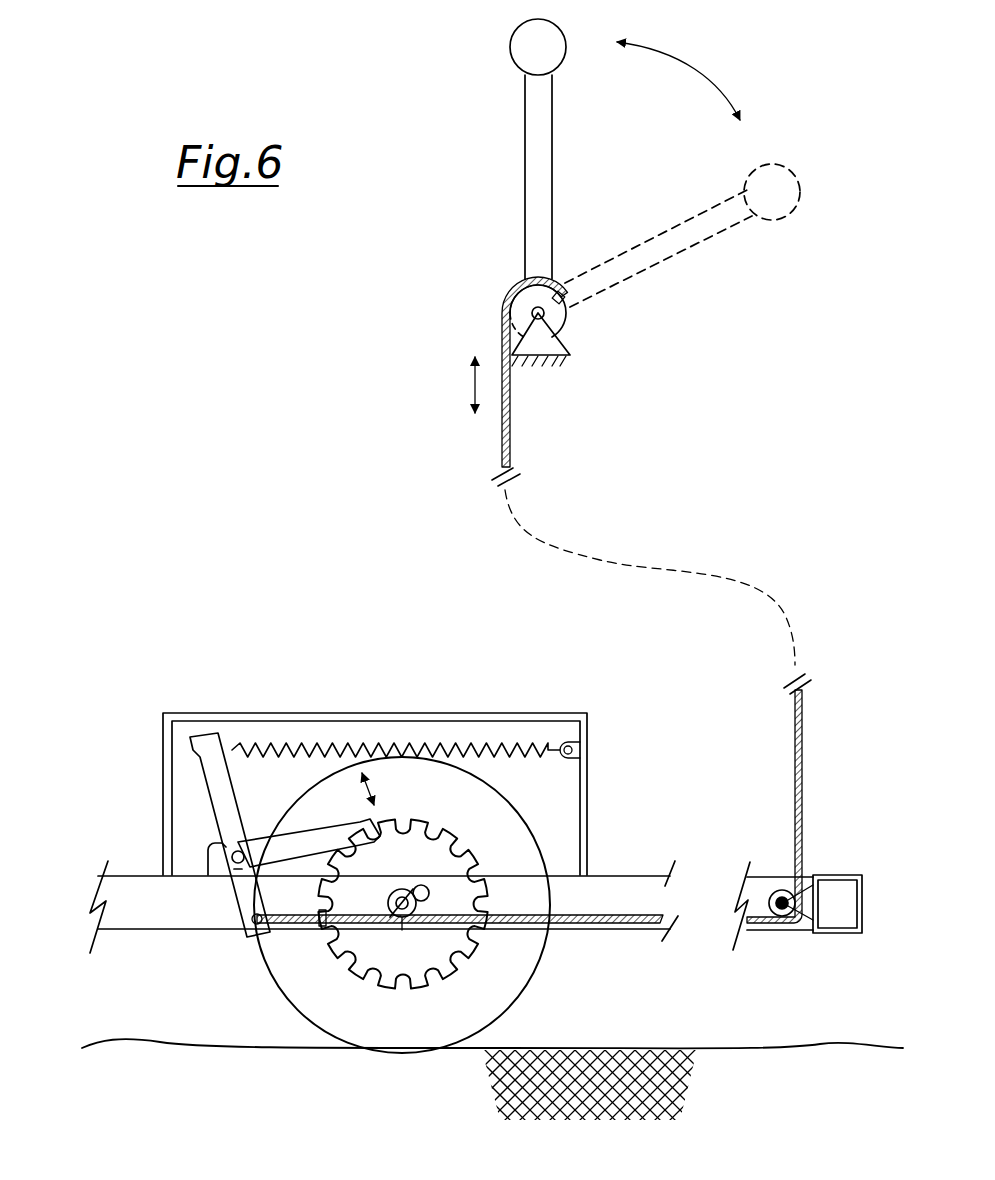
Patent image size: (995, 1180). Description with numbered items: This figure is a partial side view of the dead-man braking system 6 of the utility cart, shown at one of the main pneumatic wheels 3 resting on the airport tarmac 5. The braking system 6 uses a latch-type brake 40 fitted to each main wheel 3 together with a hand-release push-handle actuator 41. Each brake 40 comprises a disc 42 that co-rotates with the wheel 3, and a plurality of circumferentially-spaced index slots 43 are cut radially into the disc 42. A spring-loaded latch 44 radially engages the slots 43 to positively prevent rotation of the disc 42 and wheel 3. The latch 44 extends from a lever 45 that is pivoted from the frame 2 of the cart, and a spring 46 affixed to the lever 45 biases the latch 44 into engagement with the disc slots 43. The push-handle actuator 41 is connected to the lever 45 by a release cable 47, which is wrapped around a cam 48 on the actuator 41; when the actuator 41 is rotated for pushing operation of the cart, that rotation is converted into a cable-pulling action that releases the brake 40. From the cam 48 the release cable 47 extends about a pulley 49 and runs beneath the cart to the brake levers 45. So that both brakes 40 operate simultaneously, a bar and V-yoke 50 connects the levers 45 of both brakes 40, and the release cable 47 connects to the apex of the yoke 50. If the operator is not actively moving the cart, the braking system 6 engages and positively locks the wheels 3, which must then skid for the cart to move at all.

The frame 2 is at (143, 900).
The main pneumatic wheels 3 is at (507, 983).
The airport tarmac 5 is at (812, 1048).
The dead-man braking system 6 is at (273, 438).
The latch-type brake 40 is at (410, 678).
The push-handle actuator 41 is at (535, 145).
The disc 42 is at (435, 865).
The index slots 43 is at (404, 822).
The spring-loaded latch 44 is at (345, 822).
The lever 45 is at (213, 863).
The spring 46 is at (297, 843).
The release cable 47 is at (507, 430).
The cam 48 is at (560, 313).
The pulley 49 is at (777, 895).
The bar and V-yoke 50 is at (293, 921).